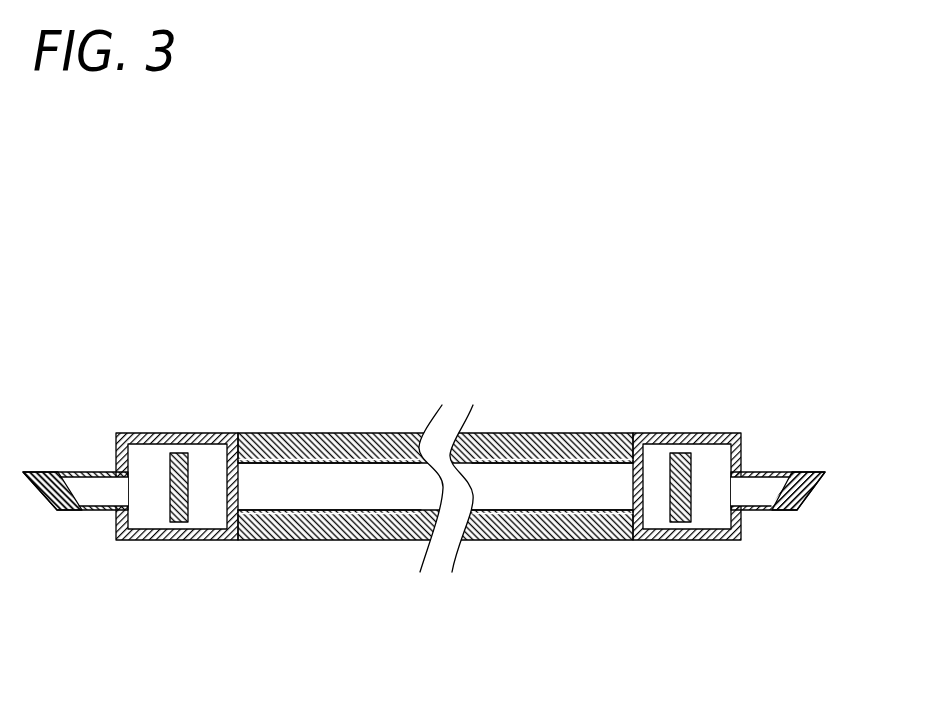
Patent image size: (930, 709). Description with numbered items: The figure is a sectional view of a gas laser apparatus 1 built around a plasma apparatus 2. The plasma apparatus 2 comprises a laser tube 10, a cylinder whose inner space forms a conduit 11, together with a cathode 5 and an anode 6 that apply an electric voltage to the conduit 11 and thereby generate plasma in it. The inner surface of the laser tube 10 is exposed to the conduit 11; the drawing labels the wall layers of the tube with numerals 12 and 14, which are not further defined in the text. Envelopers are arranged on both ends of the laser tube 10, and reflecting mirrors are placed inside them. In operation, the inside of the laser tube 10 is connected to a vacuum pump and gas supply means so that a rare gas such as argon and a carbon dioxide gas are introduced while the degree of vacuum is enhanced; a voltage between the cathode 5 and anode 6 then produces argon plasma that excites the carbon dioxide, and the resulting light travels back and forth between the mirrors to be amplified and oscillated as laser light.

The gas laser apparatus 1 is at (571, 598).
The plasma apparatus 2 is at (589, 268).
The cathode 5 is at (180, 472).
The anode 6 is at (678, 477).
The laser tube 10 is at (452, 382).
The conduit 11 is at (356, 488).
The protective layer 12 is at (315, 448).
The phosphor layer 14 is at (357, 458).